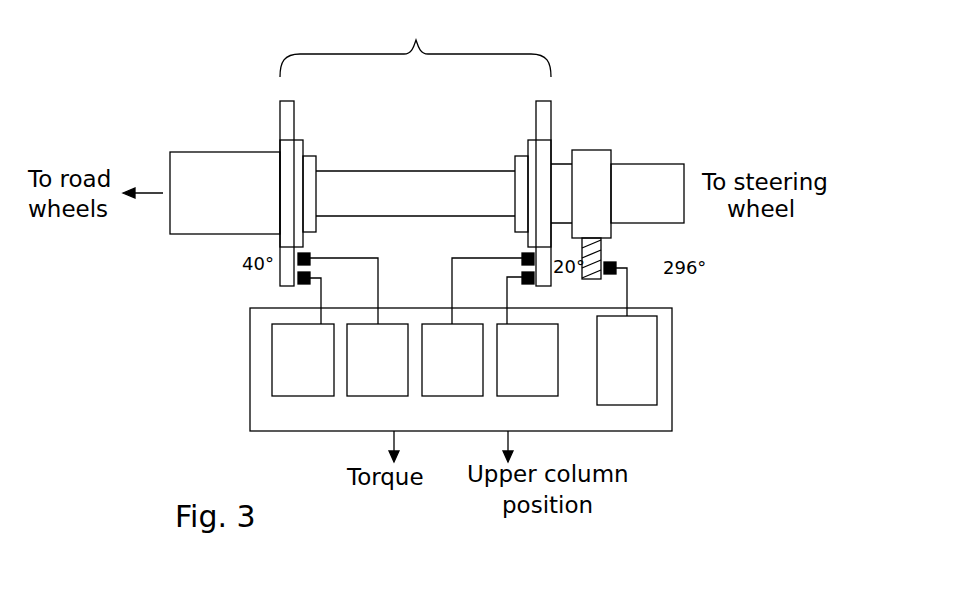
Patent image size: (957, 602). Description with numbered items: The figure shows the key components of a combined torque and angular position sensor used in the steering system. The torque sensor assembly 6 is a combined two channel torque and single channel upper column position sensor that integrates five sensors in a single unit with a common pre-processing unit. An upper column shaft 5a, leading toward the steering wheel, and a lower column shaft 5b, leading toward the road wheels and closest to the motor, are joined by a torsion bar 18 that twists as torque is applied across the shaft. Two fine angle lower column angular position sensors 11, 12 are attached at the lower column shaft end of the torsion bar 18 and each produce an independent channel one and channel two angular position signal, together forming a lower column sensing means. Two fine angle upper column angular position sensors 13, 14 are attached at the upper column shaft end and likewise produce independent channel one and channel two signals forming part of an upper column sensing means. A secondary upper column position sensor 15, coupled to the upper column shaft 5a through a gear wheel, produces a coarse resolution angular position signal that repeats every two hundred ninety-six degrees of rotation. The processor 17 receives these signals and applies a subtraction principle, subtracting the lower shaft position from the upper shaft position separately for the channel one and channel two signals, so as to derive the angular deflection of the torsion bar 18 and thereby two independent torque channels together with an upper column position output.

The upper column shaft 5a is at (653, 164).
The lower column shaft 5b is at (207, 152).
The torque sensor assembly 6 is at (415, 47).
The fine angle lower column angular position sensor 11 is at (310, 256).
The fine angle lower column angular position sensor 12 is at (310, 279).
The fine angle upper column angular position sensor 13 is at (522, 256).
The fine angle upper column angular position sensor 14 is at (522, 278).
The secondary upper column position sensor 15 is at (616, 267).
The processor 17 is at (672, 343).
The torsion bar 18 is at (398, 170).